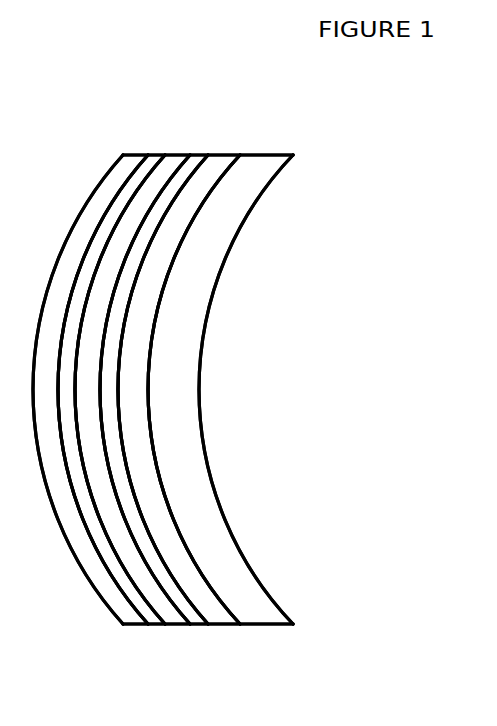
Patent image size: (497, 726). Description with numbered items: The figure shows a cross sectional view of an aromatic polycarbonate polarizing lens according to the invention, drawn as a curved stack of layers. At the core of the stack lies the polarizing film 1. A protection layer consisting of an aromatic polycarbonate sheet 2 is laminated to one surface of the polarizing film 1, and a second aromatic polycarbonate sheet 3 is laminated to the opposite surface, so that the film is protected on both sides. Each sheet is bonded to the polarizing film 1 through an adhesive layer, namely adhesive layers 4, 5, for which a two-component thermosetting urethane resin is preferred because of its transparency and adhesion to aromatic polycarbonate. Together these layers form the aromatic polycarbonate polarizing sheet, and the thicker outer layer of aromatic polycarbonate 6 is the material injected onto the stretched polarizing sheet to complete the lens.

The polarizing film 1 is at (177, 160).
The aromatic polycarbonate sheet 2 is at (135, 160).
The aromatic polycarbonate sheet 3 is at (222, 167).
The adhesive layer 4 is at (158, 620).
The adhesive layer 5 is at (200, 620).
The aromatic polycarbonate 6 is at (223, 214).